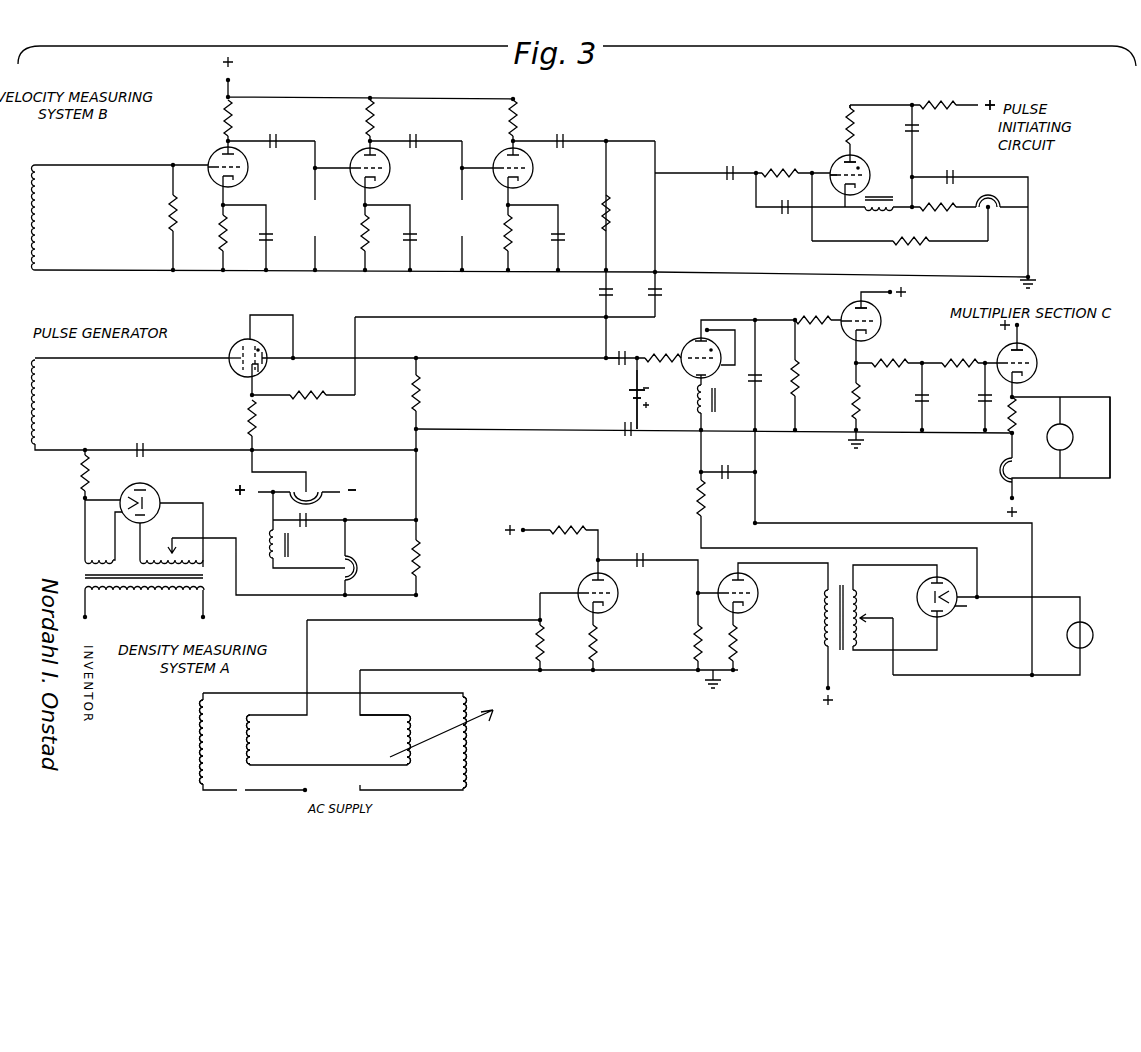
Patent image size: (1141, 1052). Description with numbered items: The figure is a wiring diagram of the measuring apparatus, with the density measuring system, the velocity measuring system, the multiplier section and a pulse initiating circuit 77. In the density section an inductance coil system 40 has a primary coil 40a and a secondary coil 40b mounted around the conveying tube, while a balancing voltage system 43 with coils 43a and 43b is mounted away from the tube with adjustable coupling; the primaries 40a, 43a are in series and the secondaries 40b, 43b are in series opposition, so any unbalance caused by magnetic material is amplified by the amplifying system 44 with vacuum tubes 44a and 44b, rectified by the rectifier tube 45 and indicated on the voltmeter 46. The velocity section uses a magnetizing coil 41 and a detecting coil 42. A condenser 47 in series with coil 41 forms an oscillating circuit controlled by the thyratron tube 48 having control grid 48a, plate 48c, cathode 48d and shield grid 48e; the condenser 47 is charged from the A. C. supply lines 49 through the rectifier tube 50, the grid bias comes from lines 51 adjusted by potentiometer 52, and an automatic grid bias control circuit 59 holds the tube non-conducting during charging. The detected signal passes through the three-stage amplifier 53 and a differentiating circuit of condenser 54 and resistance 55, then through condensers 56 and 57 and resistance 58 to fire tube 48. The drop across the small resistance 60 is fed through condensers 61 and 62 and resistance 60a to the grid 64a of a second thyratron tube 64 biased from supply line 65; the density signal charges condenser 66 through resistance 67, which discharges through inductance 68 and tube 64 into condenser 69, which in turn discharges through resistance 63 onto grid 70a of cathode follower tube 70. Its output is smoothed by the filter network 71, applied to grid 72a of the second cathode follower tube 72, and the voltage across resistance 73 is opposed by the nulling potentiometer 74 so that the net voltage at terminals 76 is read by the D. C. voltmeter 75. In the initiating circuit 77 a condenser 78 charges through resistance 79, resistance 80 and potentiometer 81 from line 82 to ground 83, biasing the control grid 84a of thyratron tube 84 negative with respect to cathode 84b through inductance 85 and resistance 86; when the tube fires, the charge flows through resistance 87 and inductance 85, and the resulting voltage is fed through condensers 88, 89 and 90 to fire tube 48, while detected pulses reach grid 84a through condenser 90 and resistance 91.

The inductance coil system 40 is at (217, 758).
The primary coil 40a is at (198, 738).
The secondary coil 40b is at (262, 738).
The magnetizing pulse producing coil 41 is at (44, 412).
The magnetic pulse detecting coil 42 is at (45, 224).
The balancing voltage system 43 is at (425, 763).
The primary coil 43a is at (470, 764).
The secondary coil 43b is at (404, 734).
The amplifying system 44 is at (645, 634).
The vacuum tube 44a is at (626, 591).
The vacuum tube 44b is at (764, 592).
The rectifier tube 45 is at (914, 598).
The voltmeter 46 is at (1094, 634).
The condenser 47 is at (152, 450).
The thyratron tube 48 is at (230, 350).
The control grid 48a is at (248, 378).
The plate 48c is at (232, 366).
The cathode 48d is at (272, 366).
The shield grid 48e is at (248, 332).
The A. C. supply lines 49 is at (186, 620).
The rectifier tube 50 is at (134, 503).
The D. C. voltage lines 51 is at (256, 494).
The potentiometer 52 is at (324, 500).
The three-stage amplifier circuit 53 is at (441, 123).
The condenser 54 is at (577, 140).
The resistance 55 is at (613, 218).
The condenser 56 is at (663, 294).
The condenser 57 is at (599, 294).
The resistance 58 is at (307, 406).
The automatic grid bias control circuit 59 is at (314, 551).
The resistance 60 is at (423, 392).
The resistance 60a is at (636, 352).
The condenser 61 is at (626, 434).
The condenser 62 is at (620, 364).
The resistance 63 is at (802, 392).
The second thyratron tube 64 is at (716, 373).
The grid 64a is at (686, 350).
The supply line 65 is at (630, 394).
The condenser 66 is at (735, 468).
The resistance 67 is at (698, 502).
The inductance 68 is at (699, 408).
The condenser 69 is at (760, 376).
The cathode follower tube 70 is at (847, 303).
The grid 70a is at (877, 324).
The filter network 71 is at (944, 417).
The second cathode follower tube 72 is at (1045, 362).
The grid 72a is at (1038, 372).
The resistance 73 is at (1020, 418).
The potentiometer 74 is at (1000, 478).
The D. C. voltmeter 75 is at (1050, 448).
The terminals 76 is at (1110, 484).
The pulse initiating circuit 77 is at (843, 92).
The condenser 78 is at (922, 132).
The resistance 79 is at (935, 102).
The resistance 80 is at (937, 214).
The potentiometer 81 is at (993, 198).
The line 82 is at (978, 104).
The ground 83 is at (1034, 282).
The thyratron tube 84 is at (866, 155).
The control grid 84a is at (874, 174).
The cathode 84b is at (840, 182).
The inductance 85 is at (880, 212).
The resistance 86 is at (919, 244).
The resistance 87 is at (842, 128).
The condenser 88 is at (962, 176).
The condenser 89 is at (784, 212).
The condenser 90 is at (735, 168).
The resistance 91 is at (784, 166).